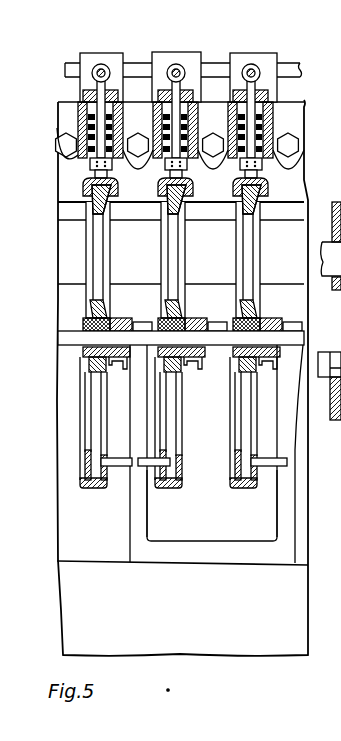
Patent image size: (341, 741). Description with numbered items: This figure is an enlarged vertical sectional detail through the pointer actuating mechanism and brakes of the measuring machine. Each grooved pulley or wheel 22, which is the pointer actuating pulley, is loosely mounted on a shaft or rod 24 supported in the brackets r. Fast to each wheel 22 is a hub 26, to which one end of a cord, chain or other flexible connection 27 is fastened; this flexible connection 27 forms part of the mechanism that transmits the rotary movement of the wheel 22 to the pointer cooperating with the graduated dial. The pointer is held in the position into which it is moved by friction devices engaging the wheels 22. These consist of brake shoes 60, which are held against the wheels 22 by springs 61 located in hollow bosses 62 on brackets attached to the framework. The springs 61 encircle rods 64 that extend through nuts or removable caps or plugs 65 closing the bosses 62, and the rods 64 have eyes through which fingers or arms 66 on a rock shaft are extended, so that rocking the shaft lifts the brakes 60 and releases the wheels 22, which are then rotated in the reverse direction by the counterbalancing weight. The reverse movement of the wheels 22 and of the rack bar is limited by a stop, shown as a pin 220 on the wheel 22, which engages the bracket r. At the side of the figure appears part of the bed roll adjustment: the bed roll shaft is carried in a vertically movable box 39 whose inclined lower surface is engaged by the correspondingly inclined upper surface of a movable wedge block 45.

The fingers or arms 66 is at (172, 72).
The nuts or removable caps or plugs 65 is at (268, 92).
The rods 64 is at (201, 95).
The hollow bosses 62 is at (280, 108).
The springs 61 is at (268, 124).
The brake shoes 60 is at (268, 192).
The box 39 is at (333, 225).
The hub 26 is at (119, 318).
The wedge block 45 is at (304, 334).
The cord, chain or other flexible connection 27 is at (118, 362).
The shaft or rod 24 is at (222, 352).
The pointer actuating pulley 22 is at (232, 431).
The pin 220 is at (140, 470).
The brackets r is at (150, 520).